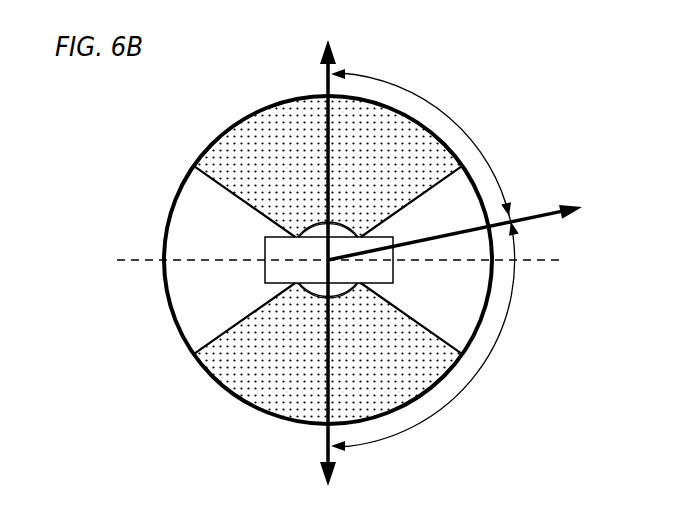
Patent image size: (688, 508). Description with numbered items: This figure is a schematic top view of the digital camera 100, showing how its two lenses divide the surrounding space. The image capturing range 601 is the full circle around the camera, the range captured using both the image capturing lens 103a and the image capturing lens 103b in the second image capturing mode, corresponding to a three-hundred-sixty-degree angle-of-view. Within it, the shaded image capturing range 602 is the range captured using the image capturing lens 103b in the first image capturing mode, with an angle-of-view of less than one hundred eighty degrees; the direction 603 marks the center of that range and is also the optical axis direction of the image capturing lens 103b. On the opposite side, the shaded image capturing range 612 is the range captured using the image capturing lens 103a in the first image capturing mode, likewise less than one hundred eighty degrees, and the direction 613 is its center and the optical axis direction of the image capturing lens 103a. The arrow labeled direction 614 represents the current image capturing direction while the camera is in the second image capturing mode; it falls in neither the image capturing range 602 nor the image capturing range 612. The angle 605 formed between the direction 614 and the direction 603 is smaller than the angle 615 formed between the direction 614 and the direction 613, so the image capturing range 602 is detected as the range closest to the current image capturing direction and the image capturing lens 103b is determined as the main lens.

The digital camera 100 is at (262, 282).
The image capturing lens 103a is at (312, 302).
The image capturing lens 103b is at (292, 236).
The image capturing range 601 is at (163, 293).
The image capturing range 602 is at (278, 137).
The direction 603 is at (326, 84).
The angle 605 is at (423, 100).
The image capturing range 612 is at (213, 358).
The direction 613 is at (325, 390).
The direction 614 is at (537, 207).
The angle 615 is at (487, 362).